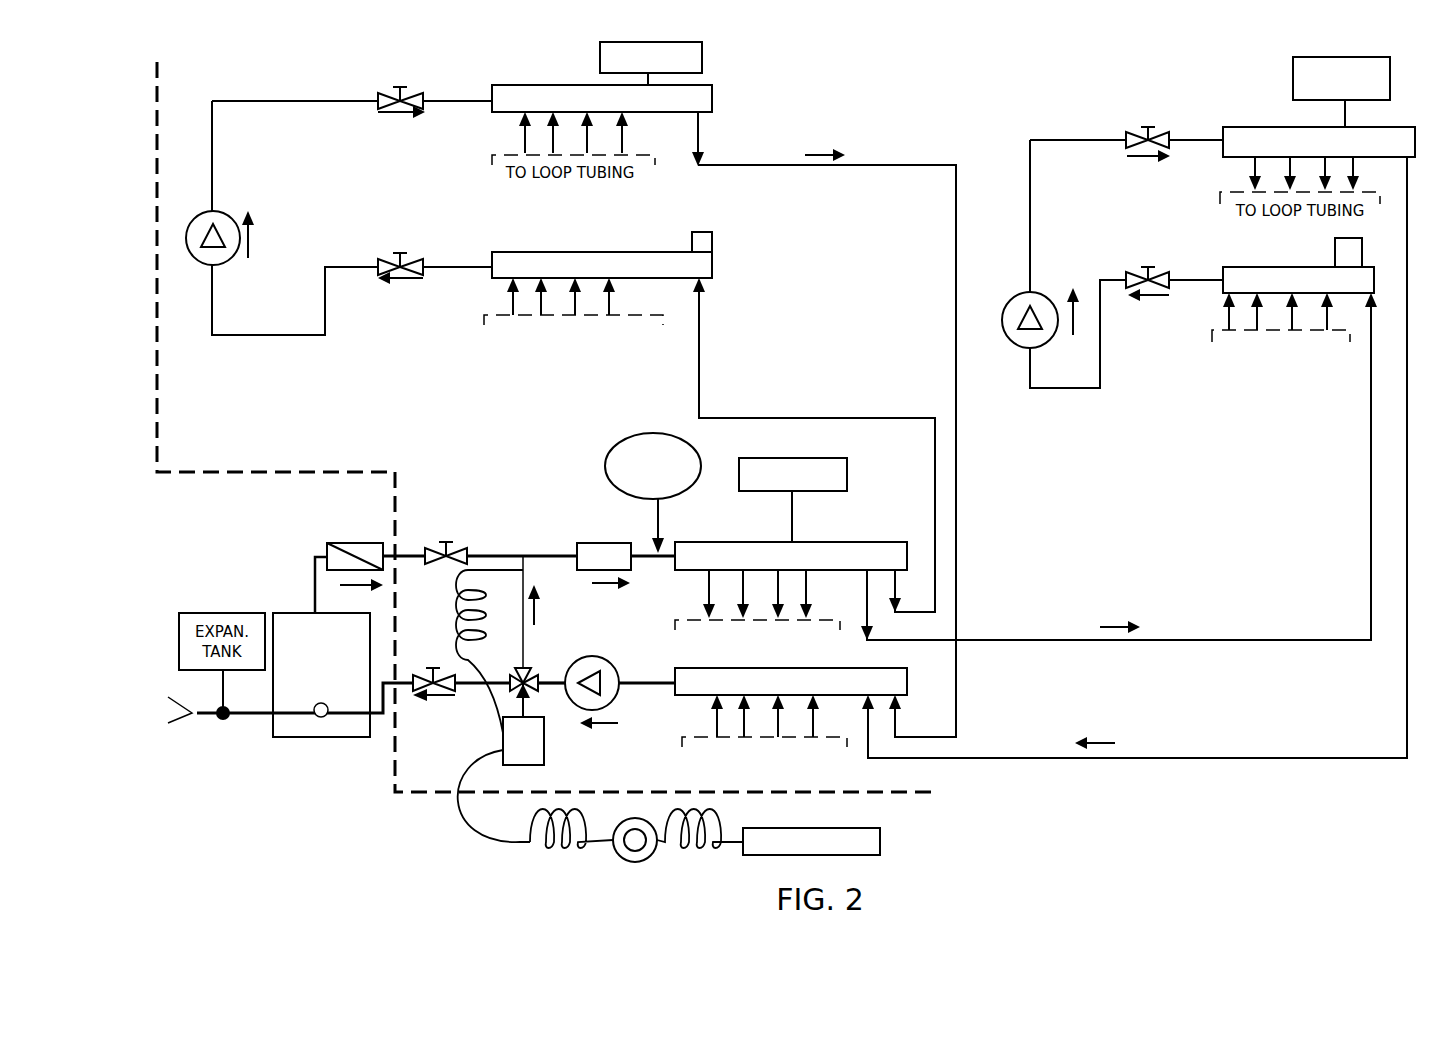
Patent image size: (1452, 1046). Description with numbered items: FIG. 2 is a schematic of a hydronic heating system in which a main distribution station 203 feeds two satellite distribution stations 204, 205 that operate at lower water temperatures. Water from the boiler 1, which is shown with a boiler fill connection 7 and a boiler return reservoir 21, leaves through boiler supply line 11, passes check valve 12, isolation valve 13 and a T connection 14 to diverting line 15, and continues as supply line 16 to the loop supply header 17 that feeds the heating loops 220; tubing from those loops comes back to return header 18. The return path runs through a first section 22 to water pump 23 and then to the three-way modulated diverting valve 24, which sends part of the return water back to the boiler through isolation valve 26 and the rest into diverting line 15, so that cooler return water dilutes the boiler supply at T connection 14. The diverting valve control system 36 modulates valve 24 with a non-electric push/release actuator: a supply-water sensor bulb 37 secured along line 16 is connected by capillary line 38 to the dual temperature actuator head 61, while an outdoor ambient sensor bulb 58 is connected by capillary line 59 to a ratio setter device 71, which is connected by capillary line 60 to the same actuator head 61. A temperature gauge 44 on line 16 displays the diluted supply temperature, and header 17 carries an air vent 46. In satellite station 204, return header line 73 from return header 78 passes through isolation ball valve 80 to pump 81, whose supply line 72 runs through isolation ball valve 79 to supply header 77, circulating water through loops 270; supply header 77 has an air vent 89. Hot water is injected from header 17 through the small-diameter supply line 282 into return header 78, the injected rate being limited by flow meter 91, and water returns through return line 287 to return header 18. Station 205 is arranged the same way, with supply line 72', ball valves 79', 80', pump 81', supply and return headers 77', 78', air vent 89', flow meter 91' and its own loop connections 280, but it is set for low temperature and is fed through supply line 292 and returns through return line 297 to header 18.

The boiler 1 is at (320, 737).
The boiler fill line 7 is at (203, 713).
The boiler supply line 11 is at (316, 557).
The check valve 12 is at (337, 543).
The isolation valve 13 is at (448, 542).
The T connection 14 is at (522, 556).
The diverting line 15 is at (525, 645).
The supply line 16 is at (555, 556).
The loop supply header 17 is at (768, 542).
The return header 18 is at (832, 668).
The boiler return reservoir 21 is at (325, 703).
The first section 22 is at (635, 683).
The water pump 23 is at (593, 656).
The three-way modulated diverting valve 24 is at (549, 690).
The isolation valve 26 is at (437, 668).
The diverting valve control system 36 is at (583, 814).
The supply header water temperature thermal sensor bulb 37 is at (578, 543).
The capillary line 38 is at (455, 622).
The temperature gauge 44 is at (615, 445).
The air vent 46 is at (768, 458).
The outdoor ambient temperature thermal sensor bulb 58 is at (815, 828).
The capillary line 59 is at (714, 814).
The capillary line 60 is at (540, 818).
The dual temperature actuator head 61 is at (544, 762).
The ratio setter device 71 is at (625, 824).
The supply line 72 is at (193, 156).
The return header line 73 is at (487, 267).
The supply header 77 is at (625, 89).
The return header 78 is at (624, 255).
The isolation ball valve 79 is at (411, 81).
The isolation ball valve 80 is at (394, 243).
The pump 81 is at (206, 259).
The air vent 89 is at (619, 63).
The flow meter 91 is at (676, 228).
The supply riser 72' is at (1009, 216).
The supply header 77' is at (1332, 130).
The return header 78' is at (1288, 265).
The supply valve 79' is at (1143, 114).
The return valve 80' is at (1137, 255).
The zone pump 81' is at (1016, 296).
The air vent 89' is at (1367, 90).
The flow meter 91' is at (1322, 247).
The main distribution station 203 is at (402, 792).
The satellite distribution station 204 is at (242, 76).
The satellite distribution station 205 is at (1183, 92).
The heating loops 220 is at (855, 776).
The loops 270 is at (511, 350).
The second zone return 280 is at (1261, 420).
The supply line 282 is at (753, 418).
The return line 287 is at (762, 165).
The supply line 292 is at (1170, 640).
The return line 297 is at (1185, 758).